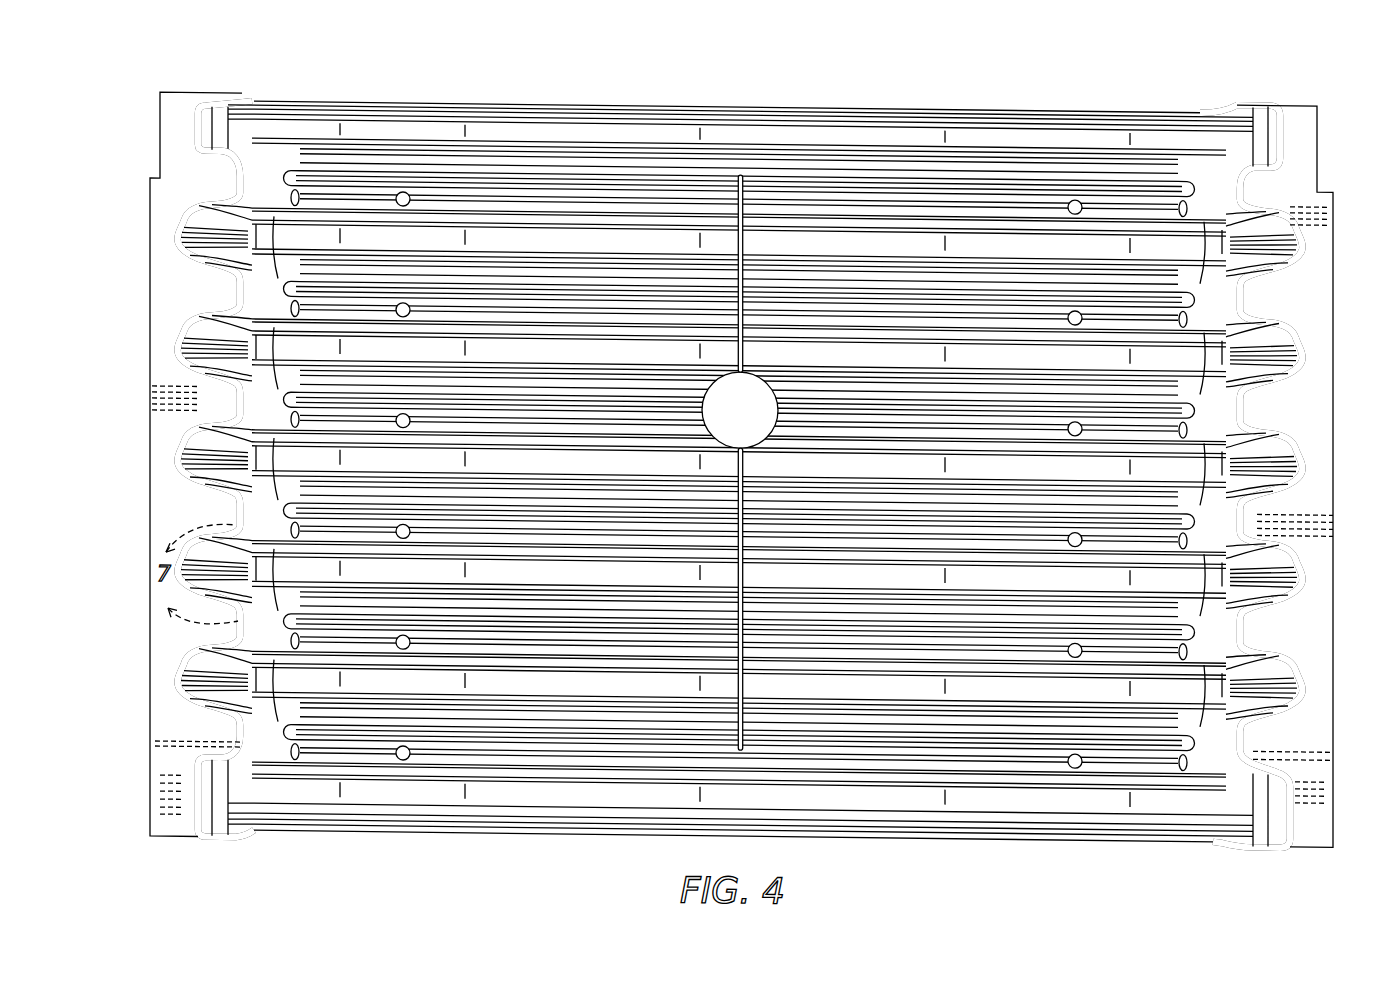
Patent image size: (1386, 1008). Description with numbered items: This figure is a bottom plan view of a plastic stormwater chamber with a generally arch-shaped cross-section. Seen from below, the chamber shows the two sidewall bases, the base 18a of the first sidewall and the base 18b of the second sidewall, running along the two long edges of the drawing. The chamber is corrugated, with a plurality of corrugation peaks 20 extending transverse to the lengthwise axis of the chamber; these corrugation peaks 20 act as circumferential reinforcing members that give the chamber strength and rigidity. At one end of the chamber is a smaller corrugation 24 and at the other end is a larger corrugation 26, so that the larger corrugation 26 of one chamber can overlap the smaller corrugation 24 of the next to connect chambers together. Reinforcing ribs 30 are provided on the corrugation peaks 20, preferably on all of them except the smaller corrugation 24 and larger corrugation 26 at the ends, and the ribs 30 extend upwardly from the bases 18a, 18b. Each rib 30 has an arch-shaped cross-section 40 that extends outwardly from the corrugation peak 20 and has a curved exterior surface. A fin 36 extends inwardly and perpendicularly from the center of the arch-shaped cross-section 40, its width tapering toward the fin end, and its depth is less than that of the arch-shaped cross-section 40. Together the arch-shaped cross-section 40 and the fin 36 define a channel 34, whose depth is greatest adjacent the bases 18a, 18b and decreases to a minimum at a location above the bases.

The base of first sidewall 18a is at (1302, 112).
The base of second sidewall 18b is at (173, 113).
The corrugation peaks 20 is at (880, 144).
The smaller corrugation 24 is at (622, 130).
The larger corrugation 26 is at (498, 805).
The reinforcing ribs 30 is at (185, 245).
The channel 34 is at (200, 262).
The fin 36 is at (210, 481).
The arch-shaped cross-section 40 is at (185, 355).